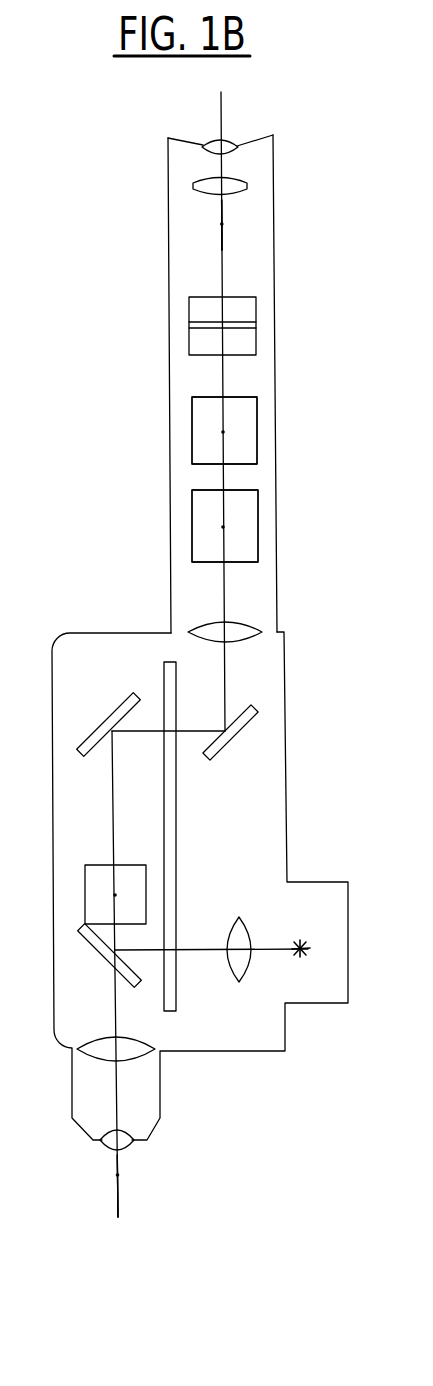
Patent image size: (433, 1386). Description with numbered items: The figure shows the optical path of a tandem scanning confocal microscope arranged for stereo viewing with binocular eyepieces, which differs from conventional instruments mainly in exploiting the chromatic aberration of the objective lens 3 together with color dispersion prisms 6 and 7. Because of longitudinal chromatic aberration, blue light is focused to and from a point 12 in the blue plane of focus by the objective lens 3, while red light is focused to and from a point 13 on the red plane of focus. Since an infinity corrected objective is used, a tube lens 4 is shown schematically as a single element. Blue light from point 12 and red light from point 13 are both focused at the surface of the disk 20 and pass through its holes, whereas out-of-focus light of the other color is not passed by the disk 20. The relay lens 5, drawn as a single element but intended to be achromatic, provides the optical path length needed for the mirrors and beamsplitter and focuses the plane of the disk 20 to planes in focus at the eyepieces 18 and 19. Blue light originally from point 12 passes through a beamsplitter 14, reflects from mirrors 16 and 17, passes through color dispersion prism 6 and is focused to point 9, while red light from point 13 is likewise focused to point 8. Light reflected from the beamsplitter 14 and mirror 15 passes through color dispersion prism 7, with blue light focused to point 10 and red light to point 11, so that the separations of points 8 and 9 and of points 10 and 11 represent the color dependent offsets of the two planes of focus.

The objective lens 3 is at (142, 1110).
The tube lens 4 is at (107, 1063).
The relay lens 5 is at (214, 622).
The color dispersion prism 6 is at (189, 325).
The color dispersion prism 7 is at (196, 336).
The point 8 is at (171, 204).
The point 9 is at (171, 217).
The point 10 is at (221, 224).
The point 11 is at (171, 231).
The point 12 is at (118, 1175).
The point 13 is at (118, 1183).
The beamsplitter 14 is at (192, 527).
The mirror 15 is at (190, 526).
The mirror 16 is at (192, 423).
The mirror 17 is at (190, 430).
The eyepiece 18 is at (238, 146).
The eyepiece 19 is at (240, 177).
The disk 20 is at (164, 682).